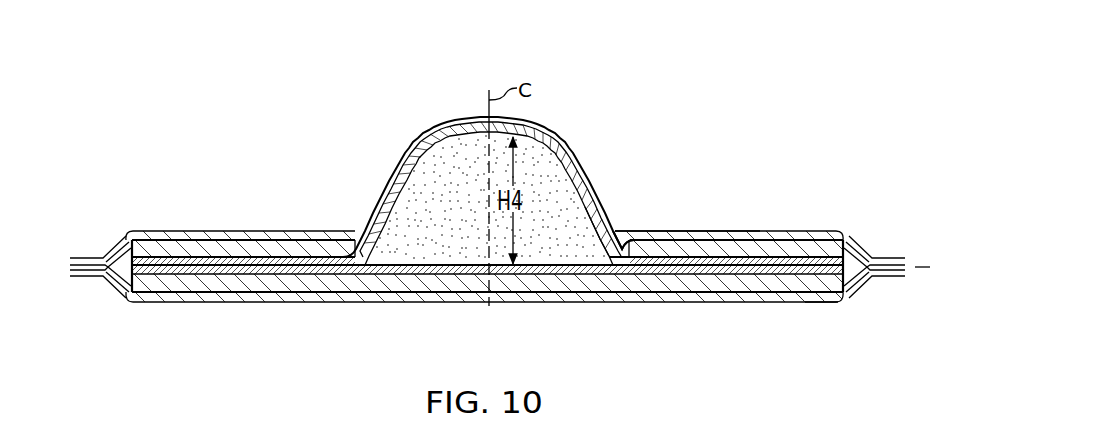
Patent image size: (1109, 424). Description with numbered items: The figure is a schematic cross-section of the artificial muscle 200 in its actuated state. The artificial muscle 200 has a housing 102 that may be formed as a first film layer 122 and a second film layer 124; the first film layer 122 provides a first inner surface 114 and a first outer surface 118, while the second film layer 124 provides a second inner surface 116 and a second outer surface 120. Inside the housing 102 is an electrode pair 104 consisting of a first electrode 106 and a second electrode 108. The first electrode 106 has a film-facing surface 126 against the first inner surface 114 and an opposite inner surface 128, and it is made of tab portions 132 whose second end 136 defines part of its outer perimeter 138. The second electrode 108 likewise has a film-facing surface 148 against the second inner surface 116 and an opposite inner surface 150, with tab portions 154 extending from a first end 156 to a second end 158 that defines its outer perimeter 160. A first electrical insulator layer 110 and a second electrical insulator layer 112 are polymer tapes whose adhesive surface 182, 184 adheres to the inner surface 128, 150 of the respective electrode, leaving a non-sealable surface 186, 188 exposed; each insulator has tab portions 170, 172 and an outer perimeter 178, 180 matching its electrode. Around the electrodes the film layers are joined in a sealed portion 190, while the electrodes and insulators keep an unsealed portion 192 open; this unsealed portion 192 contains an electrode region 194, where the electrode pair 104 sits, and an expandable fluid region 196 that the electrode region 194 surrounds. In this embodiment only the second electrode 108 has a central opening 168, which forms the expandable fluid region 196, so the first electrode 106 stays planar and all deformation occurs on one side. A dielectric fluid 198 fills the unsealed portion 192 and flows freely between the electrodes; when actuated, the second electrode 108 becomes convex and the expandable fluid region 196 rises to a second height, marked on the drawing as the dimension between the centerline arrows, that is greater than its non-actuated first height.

The artificial muscle 200 is at (716, 106).
The housing 102 is at (88, 220).
The electrode pair 104 is at (836, 314).
The first electrode 106 is at (751, 314).
The second electrode 108 is at (768, 218).
The first electrical insulator layer 110 is at (471, 252).
The second electrical insulator layer 112 is at (456, 151).
The first inner surface 114 is at (124, 291).
The second inner surface 116 is at (121, 246).
The first outer surface 118 is at (73, 277).
The second outer surface 120 is at (72, 257).
The first film layer 122 is at (397, 306).
The second film layer 124 is at (398, 128).
The film-facing surface 126 is at (252, 286).
The inner surface 128 is at (227, 286).
The tab portions 132 is at (311, 306).
The second end 136 is at (152, 291).
The outer perimeter 138 is at (128, 303).
The film-facing surface 148 is at (220, 226).
The inner surface 150 is at (255, 250).
The tab portions 154 is at (298, 220).
The first end 156 is at (359, 248).
The second end 158 is at (148, 241).
The outer perimeter 160 is at (133, 239).
The central opening 168 is at (600, 254).
The tab portions 170 is at (806, 296).
The tab portions 172 is at (825, 256).
The outer perimeter 178 is at (858, 284).
The outer perimeter 180 is at (866, 258).
The adhesive surface 182 is at (664, 270).
The adhesive surface 184 is at (708, 262).
The non-sealable surface 186 is at (552, 266).
The non-sealable surface 188 is at (565, 186).
The sealed portion 190 is at (912, 263).
The unsealed portion 192 is at (818, 203).
The electrode region 194 is at (668, 229).
The expandable fluid region 196 is at (538, 165).
The dielectric fluid 198 is at (466, 138).